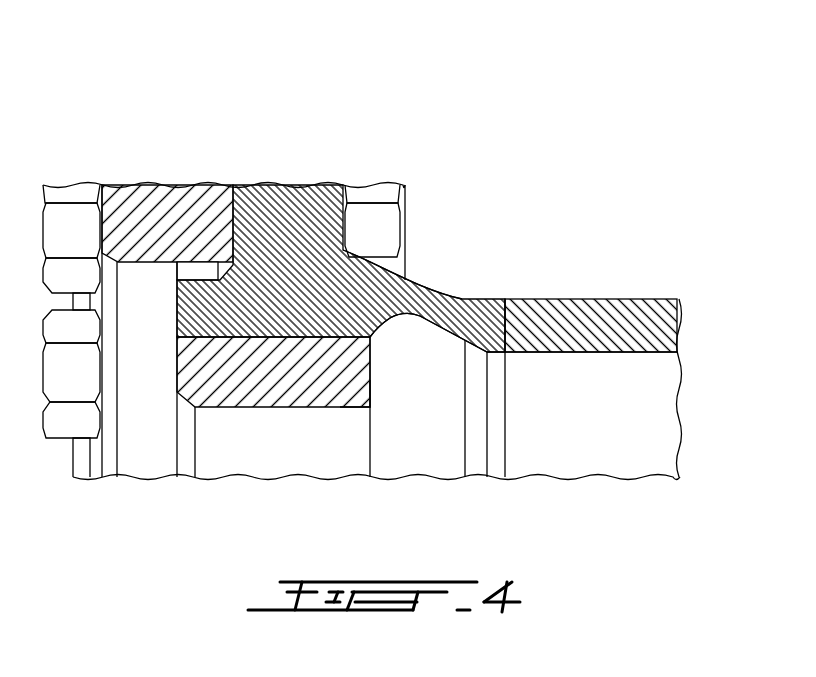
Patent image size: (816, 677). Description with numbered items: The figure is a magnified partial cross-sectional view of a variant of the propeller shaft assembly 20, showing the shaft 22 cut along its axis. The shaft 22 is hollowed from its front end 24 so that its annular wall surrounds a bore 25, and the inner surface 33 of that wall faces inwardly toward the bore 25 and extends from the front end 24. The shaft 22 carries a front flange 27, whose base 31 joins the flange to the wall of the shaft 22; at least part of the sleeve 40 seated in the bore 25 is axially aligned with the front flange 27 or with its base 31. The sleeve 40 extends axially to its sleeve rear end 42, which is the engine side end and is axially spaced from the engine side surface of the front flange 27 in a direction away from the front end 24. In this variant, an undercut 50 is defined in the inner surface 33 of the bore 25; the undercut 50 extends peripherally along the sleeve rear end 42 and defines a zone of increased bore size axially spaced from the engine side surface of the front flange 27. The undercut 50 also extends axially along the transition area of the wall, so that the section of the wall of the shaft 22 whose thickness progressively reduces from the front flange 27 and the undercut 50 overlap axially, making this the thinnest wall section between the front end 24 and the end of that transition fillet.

The propeller shaft assembly 20 is at (650, 110).
The shaft 22 is at (658, 247).
The front end 24 is at (173, 334).
The bore 25 is at (449, 378).
The front flange 27 is at (315, 228).
The base 31 is at (430, 262).
The inner surface 33 is at (523, 356).
The sleeve 40 is at (332, 378).
The sleeve rear end 42 is at (374, 409).
The undercut 50 is at (432, 332).